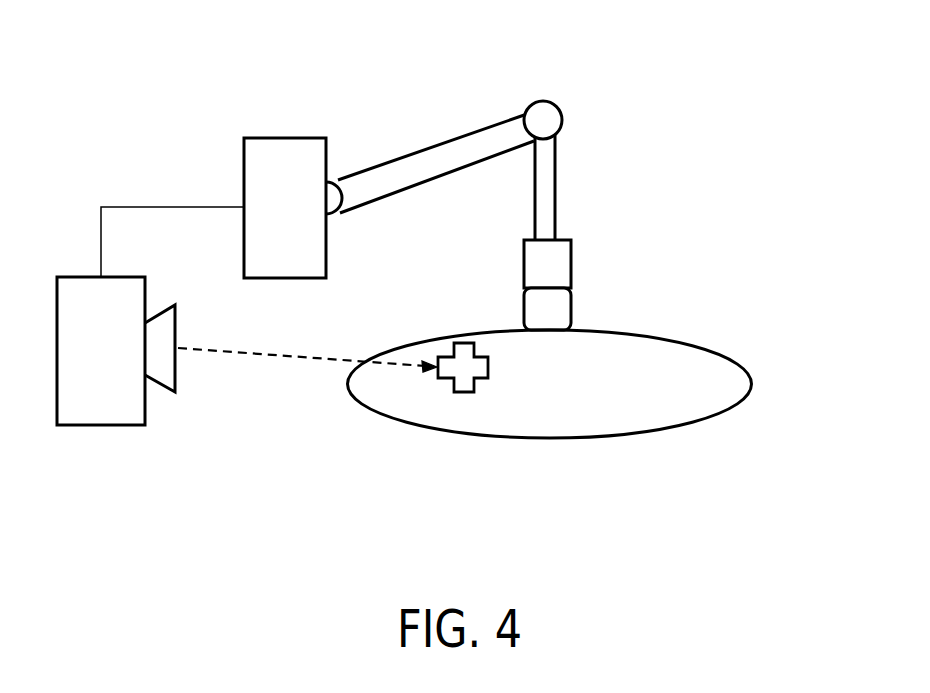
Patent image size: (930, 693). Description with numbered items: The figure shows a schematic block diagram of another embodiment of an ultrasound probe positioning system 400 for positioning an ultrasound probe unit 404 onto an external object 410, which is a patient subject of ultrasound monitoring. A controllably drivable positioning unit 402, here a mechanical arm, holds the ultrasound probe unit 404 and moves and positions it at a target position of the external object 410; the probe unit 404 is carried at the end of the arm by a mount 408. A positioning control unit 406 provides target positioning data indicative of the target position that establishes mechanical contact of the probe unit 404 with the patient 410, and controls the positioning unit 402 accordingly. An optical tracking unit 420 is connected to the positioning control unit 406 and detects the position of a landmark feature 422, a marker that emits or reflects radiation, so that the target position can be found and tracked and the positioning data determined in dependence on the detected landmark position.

The ultrasound probe positioning system 400 is at (672, 98).
The positioning unit 402 is at (458, 135).
The ultrasound probe unit 404 is at (572, 310).
The positioning control unit 406 is at (253, 138).
The tool mount 408 is at (572, 262).
The external object 410 is at (693, 343).
The optical tracking unit 420 is at (98, 425).
The landmark feature 422 is at (467, 393).